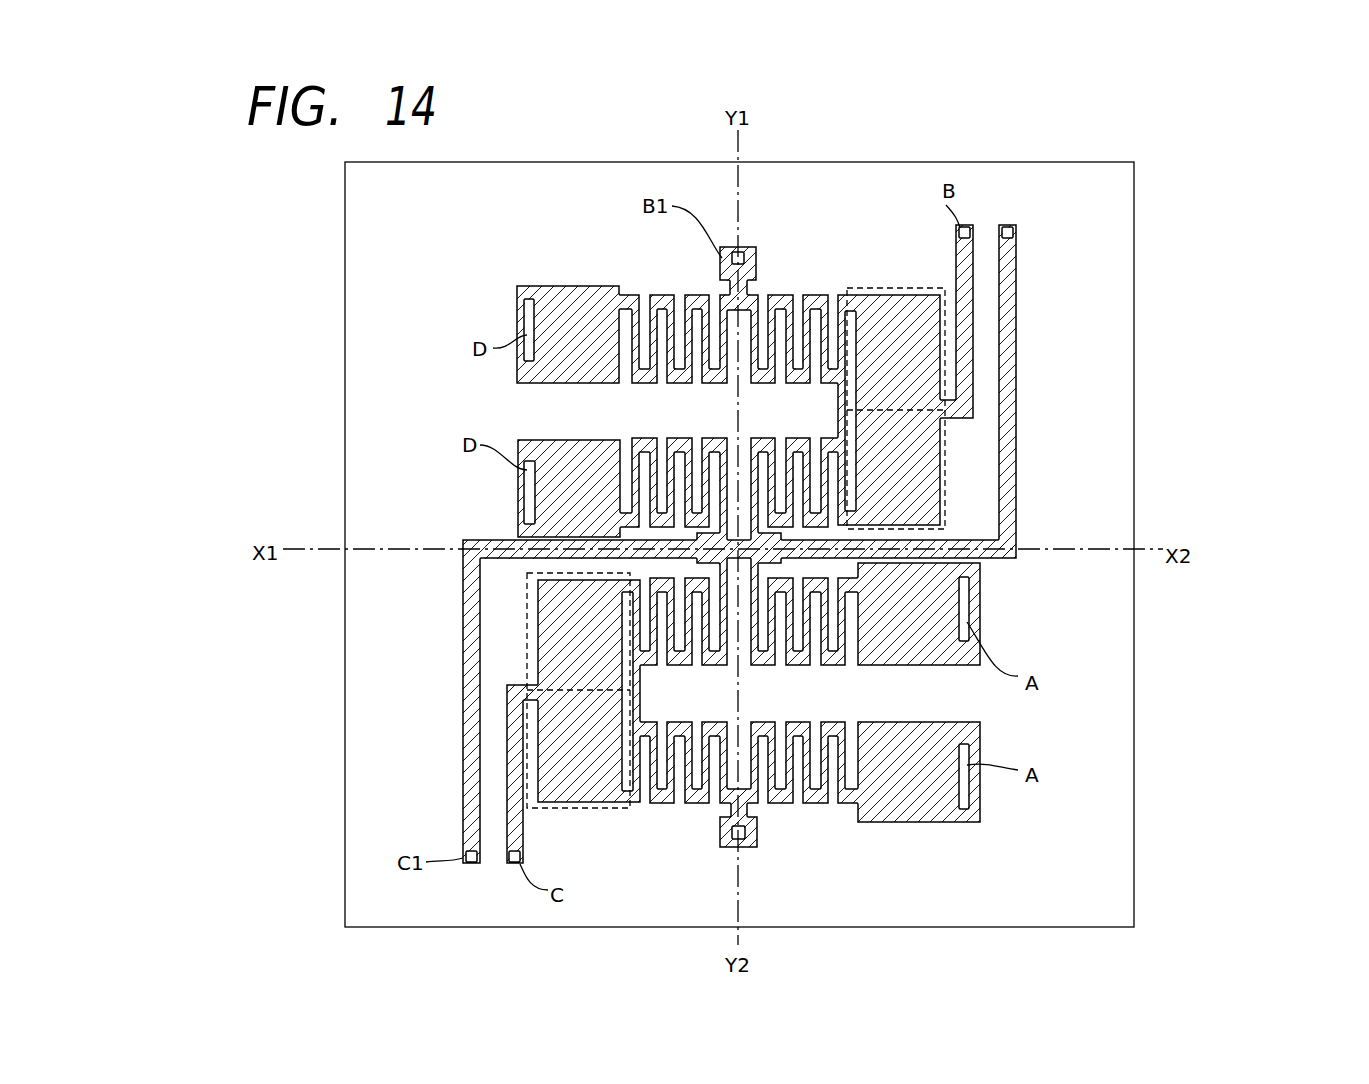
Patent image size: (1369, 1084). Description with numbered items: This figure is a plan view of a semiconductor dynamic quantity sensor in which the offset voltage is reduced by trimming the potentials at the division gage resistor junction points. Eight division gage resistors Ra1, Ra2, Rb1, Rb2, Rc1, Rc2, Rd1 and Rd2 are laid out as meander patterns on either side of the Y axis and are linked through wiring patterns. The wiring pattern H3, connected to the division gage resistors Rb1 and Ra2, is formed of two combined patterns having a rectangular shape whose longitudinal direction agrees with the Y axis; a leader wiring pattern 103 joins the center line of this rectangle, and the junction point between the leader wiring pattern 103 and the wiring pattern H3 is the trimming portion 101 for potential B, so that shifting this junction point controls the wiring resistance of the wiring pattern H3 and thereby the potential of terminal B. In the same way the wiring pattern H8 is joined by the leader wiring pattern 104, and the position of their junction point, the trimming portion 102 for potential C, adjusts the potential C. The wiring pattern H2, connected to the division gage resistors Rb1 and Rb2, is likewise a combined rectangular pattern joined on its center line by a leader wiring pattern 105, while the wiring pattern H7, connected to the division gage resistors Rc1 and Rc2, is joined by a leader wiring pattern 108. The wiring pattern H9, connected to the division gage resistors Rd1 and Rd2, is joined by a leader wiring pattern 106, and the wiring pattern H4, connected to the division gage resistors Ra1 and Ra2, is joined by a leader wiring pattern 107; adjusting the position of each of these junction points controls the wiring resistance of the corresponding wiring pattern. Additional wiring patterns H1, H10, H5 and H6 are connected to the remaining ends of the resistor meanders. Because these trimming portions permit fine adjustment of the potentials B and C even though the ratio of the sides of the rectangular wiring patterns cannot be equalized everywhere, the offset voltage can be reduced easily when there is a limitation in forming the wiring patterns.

The trace for potential B 101 is at (972, 407).
The trimming portion for potential C 102 is at (509, 694).
The leader wiring pattern 103 is at (975, 250).
The leader wiring pattern 104 is at (507, 768).
The leader wiring pattern 105 is at (756, 298).
The leader wiring pattern 106 is at (515, 563).
The leader wiring pattern 107 is at (1000, 560).
The leader wiring pattern 108 is at (732, 805).
The pad H1 is at (568, 334).
The wiring pattern H2 is at (808, 265).
The wiring pattern H3 is at (889, 394).
The wiring pattern H4 is at (778, 543).
The pad H5 is at (919, 614).
The pad H6 is at (919, 772).
The wiring pattern H7 is at (809, 834).
The wiring pattern H8 is at (589, 712).
The wiring pattern H9 is at (698, 542).
The pad H10 is at (569, 488).
The division gage resistor Ra1 is at (804, 637).
The division gage resistor Ra2 is at (798, 470).
The division gage resistor Rb1 is at (798, 323).
The division gage resistor Rb2 is at (673, 323).
The division gage resistor Rc1 is at (804, 780).
The division gage resistor Rc2 is at (680, 780).
The division gage resistor Rd1 is at (680, 637).
The division gage resistor Rd2 is at (673, 470).